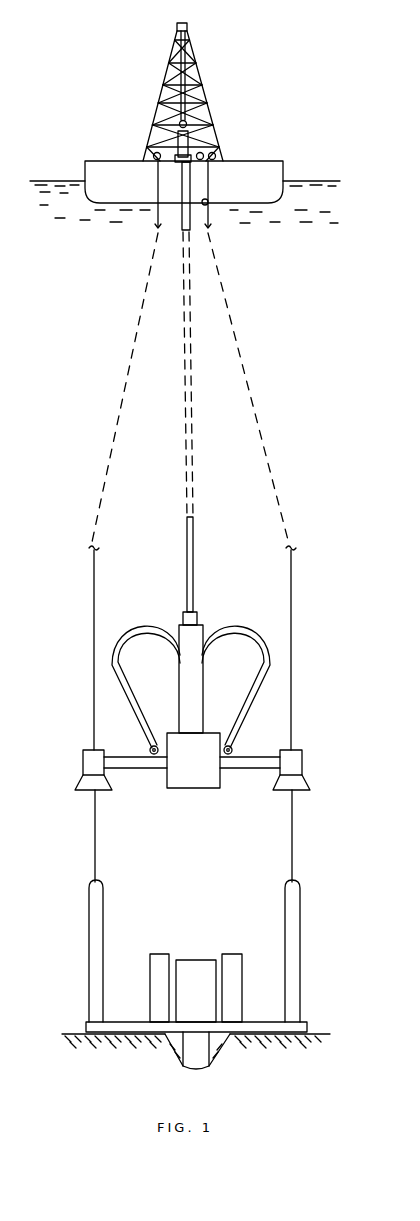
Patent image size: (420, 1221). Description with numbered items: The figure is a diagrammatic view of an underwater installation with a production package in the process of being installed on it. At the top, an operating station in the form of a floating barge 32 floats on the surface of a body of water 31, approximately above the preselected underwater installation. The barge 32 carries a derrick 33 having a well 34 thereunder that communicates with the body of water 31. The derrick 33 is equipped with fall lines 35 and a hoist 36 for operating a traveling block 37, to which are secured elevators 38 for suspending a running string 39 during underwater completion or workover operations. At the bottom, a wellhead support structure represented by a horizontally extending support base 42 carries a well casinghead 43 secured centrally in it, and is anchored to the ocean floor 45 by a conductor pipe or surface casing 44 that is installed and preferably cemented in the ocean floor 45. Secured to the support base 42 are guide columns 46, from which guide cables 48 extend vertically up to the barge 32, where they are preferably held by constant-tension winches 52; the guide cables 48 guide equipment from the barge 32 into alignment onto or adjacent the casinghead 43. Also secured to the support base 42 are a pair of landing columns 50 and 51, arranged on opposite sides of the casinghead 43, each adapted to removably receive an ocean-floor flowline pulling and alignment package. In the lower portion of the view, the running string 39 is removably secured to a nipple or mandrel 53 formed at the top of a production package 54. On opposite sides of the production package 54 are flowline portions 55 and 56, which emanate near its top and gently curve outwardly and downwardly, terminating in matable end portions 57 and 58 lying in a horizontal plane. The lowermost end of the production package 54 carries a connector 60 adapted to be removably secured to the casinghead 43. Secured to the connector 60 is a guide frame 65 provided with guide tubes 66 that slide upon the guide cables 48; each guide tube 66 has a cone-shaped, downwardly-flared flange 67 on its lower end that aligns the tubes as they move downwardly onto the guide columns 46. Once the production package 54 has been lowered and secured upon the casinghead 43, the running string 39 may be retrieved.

The body of water 31 is at (300, 183).
The floating barge 32 is at (118, 157).
The derrick 33 is at (195, 32).
The well 34 is at (209, 206).
The fall lines 35 is at (176, 86).
The hoist 36 is at (216, 152).
The traveling block 37 is at (190, 125).
The elevators 38 is at (176, 140).
The running string 39 is at (180, 228).
The support base 42 is at (133, 1020).
The well casinghead 43 is at (205, 993).
The conductor pipe 44 is at (208, 1062).
The ocean floor 45 is at (322, 1032).
The guide columns 46 is at (88, 905).
The guide cables 48 is at (97, 826).
The landing column 50 is at (148, 960).
The landing column 51 is at (245, 960).
The constant-tension winches 52 is at (154, 152).
The mandrel 53 is at (198, 615).
The production package 54 is at (172, 678).
The flowline portion 55 is at (142, 625).
The flowline portion 56 is at (240, 625).
The matable end portion 57 is at (149, 748).
The matable end portion 58 is at (233, 748).
The connector 60 is at (205, 782).
The guide frame 65 is at (122, 770).
The guide tubes 66 is at (82, 765).
The downwardly-flared flange 67 is at (78, 785).